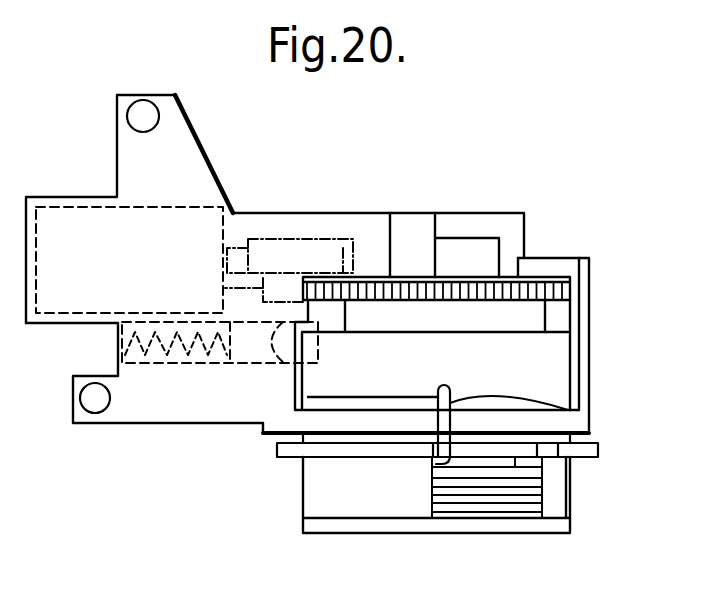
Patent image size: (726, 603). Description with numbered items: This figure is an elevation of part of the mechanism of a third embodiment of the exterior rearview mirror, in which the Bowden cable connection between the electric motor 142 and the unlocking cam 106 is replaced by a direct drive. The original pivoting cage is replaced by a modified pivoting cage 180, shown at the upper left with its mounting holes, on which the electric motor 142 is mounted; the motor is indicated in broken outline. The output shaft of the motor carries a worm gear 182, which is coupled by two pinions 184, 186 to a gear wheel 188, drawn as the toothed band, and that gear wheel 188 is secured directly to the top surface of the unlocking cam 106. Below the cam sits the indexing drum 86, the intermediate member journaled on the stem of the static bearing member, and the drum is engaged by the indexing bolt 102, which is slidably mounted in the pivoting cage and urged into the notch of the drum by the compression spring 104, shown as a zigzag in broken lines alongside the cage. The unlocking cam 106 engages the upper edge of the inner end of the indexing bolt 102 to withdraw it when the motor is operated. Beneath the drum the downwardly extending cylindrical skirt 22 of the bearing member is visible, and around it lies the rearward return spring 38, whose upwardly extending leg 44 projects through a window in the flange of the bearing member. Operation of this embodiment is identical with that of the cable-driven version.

The modified pivoting cage 180 is at (183, 157).
The electric motor 142 is at (185, 212).
The worm gear 182 is at (323, 235).
The pinion 184 is at (410, 220).
The gear wheel 188 is at (538, 276).
The pinion 186 is at (225, 288).
The unlocking cam 106 is at (531, 315).
The indexing drum 86 is at (558, 377).
The upwardly extending leg 44 is at (578, 410).
The rearward return spring 38 is at (530, 492).
The cylindrical skirt 22 is at (315, 488).
The compression spring 104 is at (118, 340).
The indexing bolt 102 is at (283, 330).